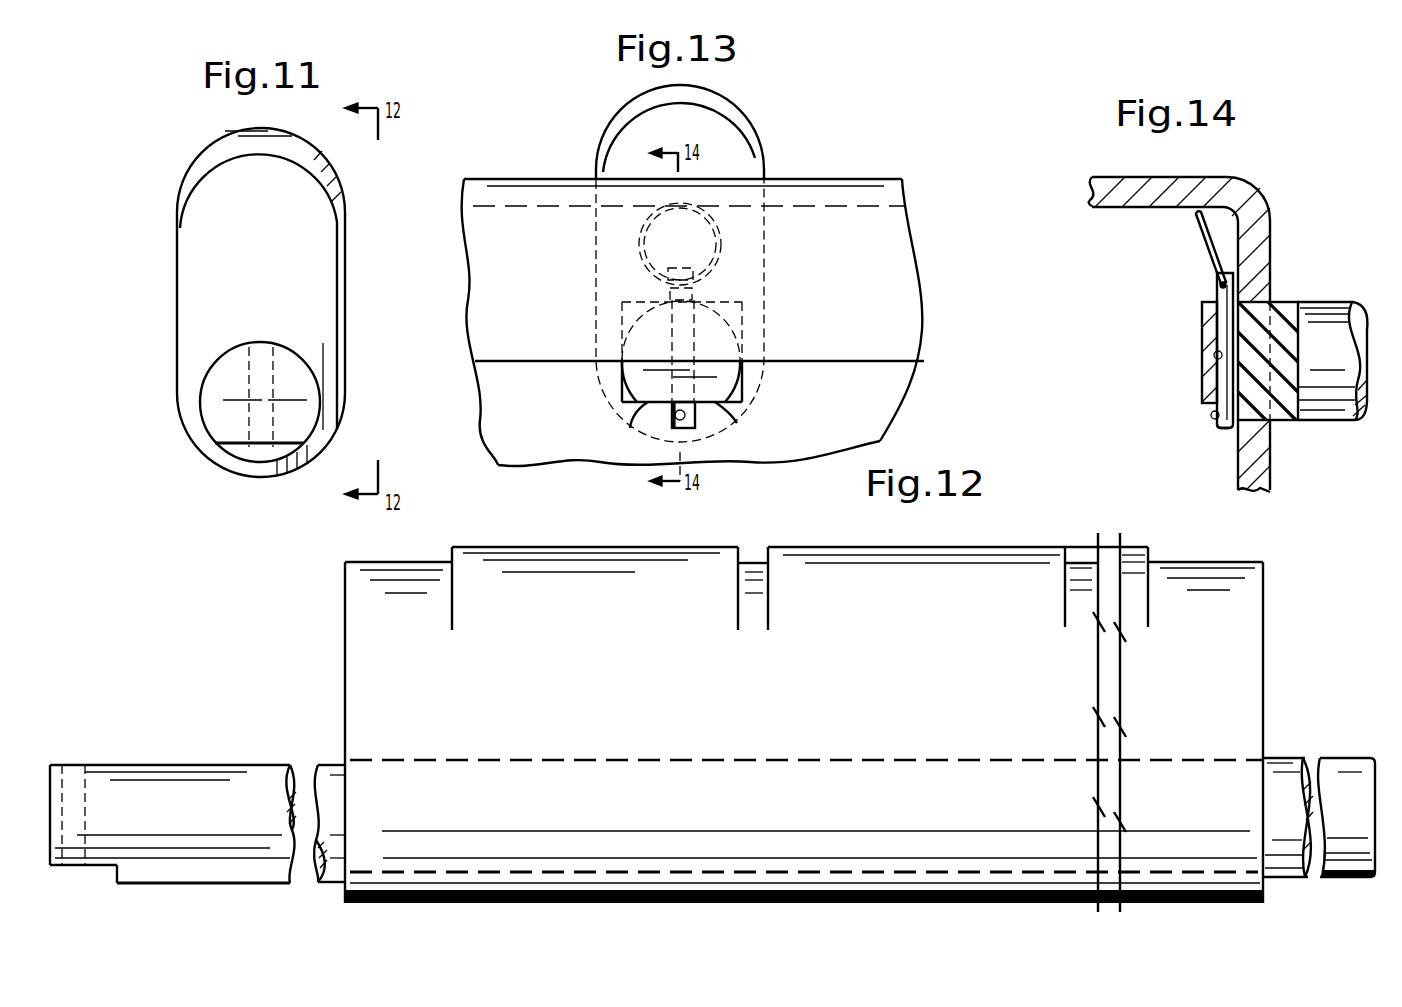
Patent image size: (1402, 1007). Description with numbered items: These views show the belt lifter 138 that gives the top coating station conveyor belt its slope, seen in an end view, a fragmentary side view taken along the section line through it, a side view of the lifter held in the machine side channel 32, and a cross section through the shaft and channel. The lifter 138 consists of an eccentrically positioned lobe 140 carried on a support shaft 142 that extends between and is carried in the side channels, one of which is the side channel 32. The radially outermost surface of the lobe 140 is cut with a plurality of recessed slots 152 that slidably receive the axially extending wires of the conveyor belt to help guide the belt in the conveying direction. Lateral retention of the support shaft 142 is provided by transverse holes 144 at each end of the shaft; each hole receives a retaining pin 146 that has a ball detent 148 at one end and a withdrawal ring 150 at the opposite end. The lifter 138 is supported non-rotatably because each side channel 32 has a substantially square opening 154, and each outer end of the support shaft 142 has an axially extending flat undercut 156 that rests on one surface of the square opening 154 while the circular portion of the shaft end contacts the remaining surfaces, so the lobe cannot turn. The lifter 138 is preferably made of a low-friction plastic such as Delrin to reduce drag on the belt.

In FIG. 13, the side channel 32 is at (891, 275).
In FIG. 14, the side channel 32 is at (1260, 230).
In FIG. 11, the belt lifter 138 is at (176, 293).
In FIG. 13, the belt lifter 138 is at (745, 161).
In FIG. 12, the belt lifter 138 is at (1250, 597).
In FIG. 11, the lobe 140 is at (320, 190).
In FIG. 13, the lobe 140 is at (716, 123).
In FIG. 12, the lobe 140 is at (1243, 688).
In FIG. 11, the support shaft 142 is at (305, 403).
In FIG. 13, the support shaft 142 is at (731, 417).
In FIG. 14, the support shaft 142 is at (1330, 403).
In FIG. 12, the support shaft 142 is at (1350, 759).
In FIG. 14, the transverse hole 144 is at (1215, 358).
In FIG. 12, the transverse hole 144 is at (85, 780).
In FIG. 14, the retaining pin 146 is at (1222, 320).
In FIG. 13, the ball detent 148 is at (698, 425).
In FIG. 14, the ball detent 148 is at (1213, 421).
In FIG. 13, the withdrawal ring 150 is at (719, 255).
In FIG. 14, the withdrawal ring 150 is at (1198, 232).
In FIG. 12, the recessed slot 152 is at (753, 562).
In FIG. 13, the square opening 154 is at (742, 380).
In FIG. 14, the square opening 154 is at (1260, 300).
In FIG. 13, the flat undercut 156 is at (640, 425).
In FIG. 14, the flat undercut 156 is at (1209, 407).